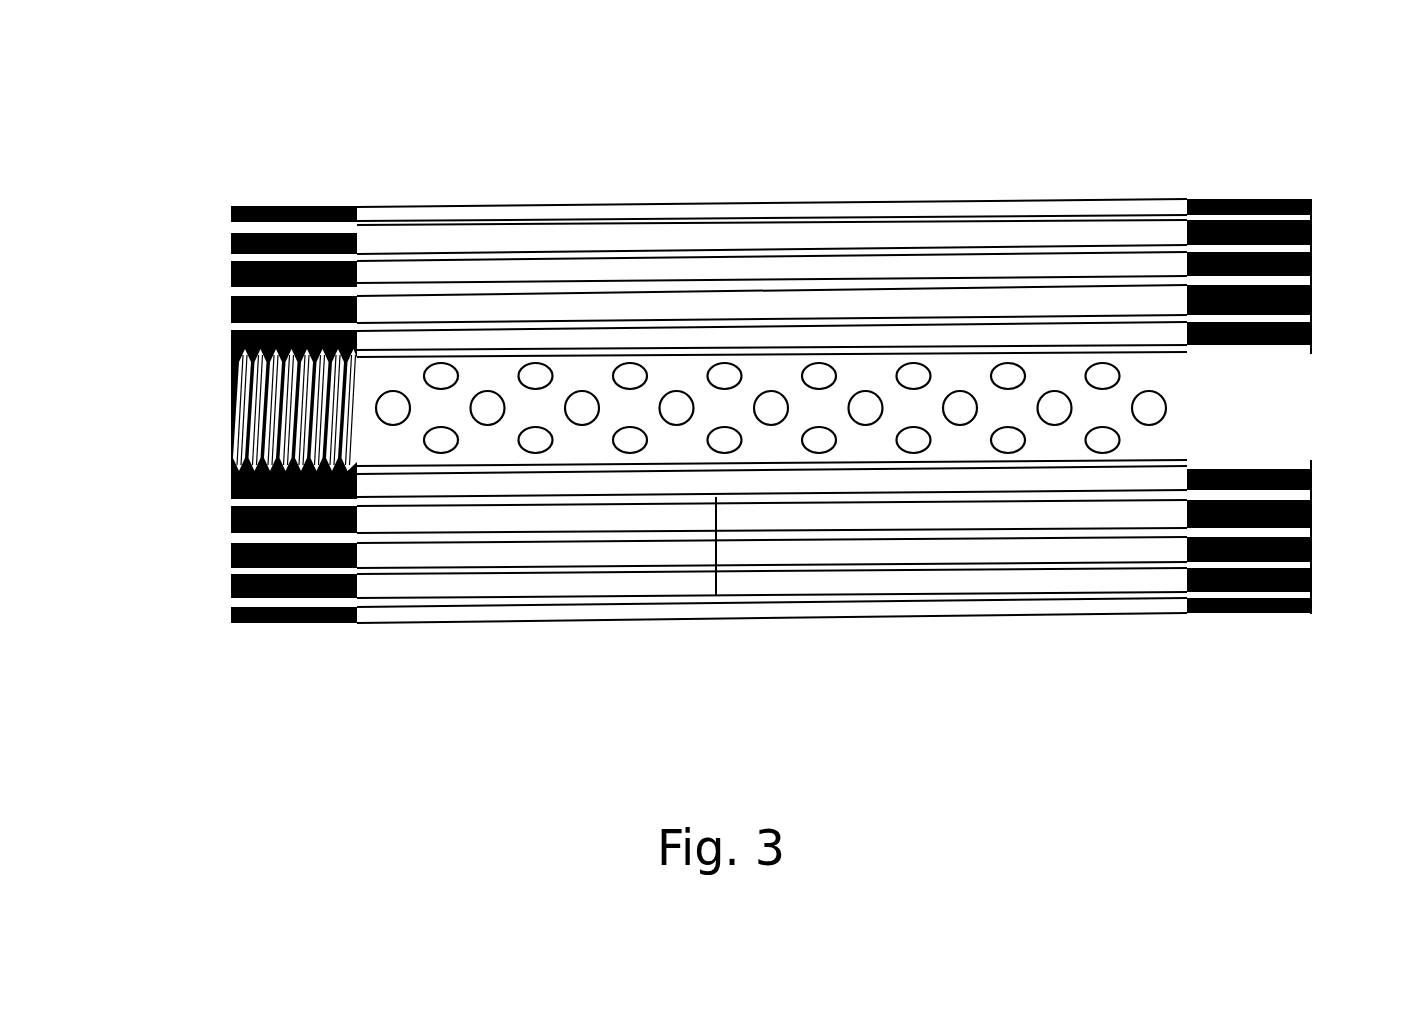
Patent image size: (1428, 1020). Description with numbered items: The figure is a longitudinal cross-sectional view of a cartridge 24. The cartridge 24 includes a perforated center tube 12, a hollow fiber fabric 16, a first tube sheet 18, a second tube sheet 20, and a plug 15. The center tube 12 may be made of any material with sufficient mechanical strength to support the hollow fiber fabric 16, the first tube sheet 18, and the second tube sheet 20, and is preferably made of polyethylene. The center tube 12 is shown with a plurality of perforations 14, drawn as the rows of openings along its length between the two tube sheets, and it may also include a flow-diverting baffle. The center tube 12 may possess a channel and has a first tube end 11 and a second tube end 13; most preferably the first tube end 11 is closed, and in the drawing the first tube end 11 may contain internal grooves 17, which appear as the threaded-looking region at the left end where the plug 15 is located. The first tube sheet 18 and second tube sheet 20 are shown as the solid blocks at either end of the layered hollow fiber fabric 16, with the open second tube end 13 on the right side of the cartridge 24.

The first tube end 11 is at (230, 377).
The perforated center tube 12 is at (1212, 423).
The second tube end 13 is at (1308, 413).
The perforations 14 is at (1057, 407).
The plug 15 is at (246, 418).
The hollow fiber fabric 16 is at (716, 554).
The internal grooves 17 is at (237, 468).
The first tube sheet 18 is at (358, 303).
The second tube sheet 20 is at (1186, 303).
The cartridge 24 is at (810, 150).